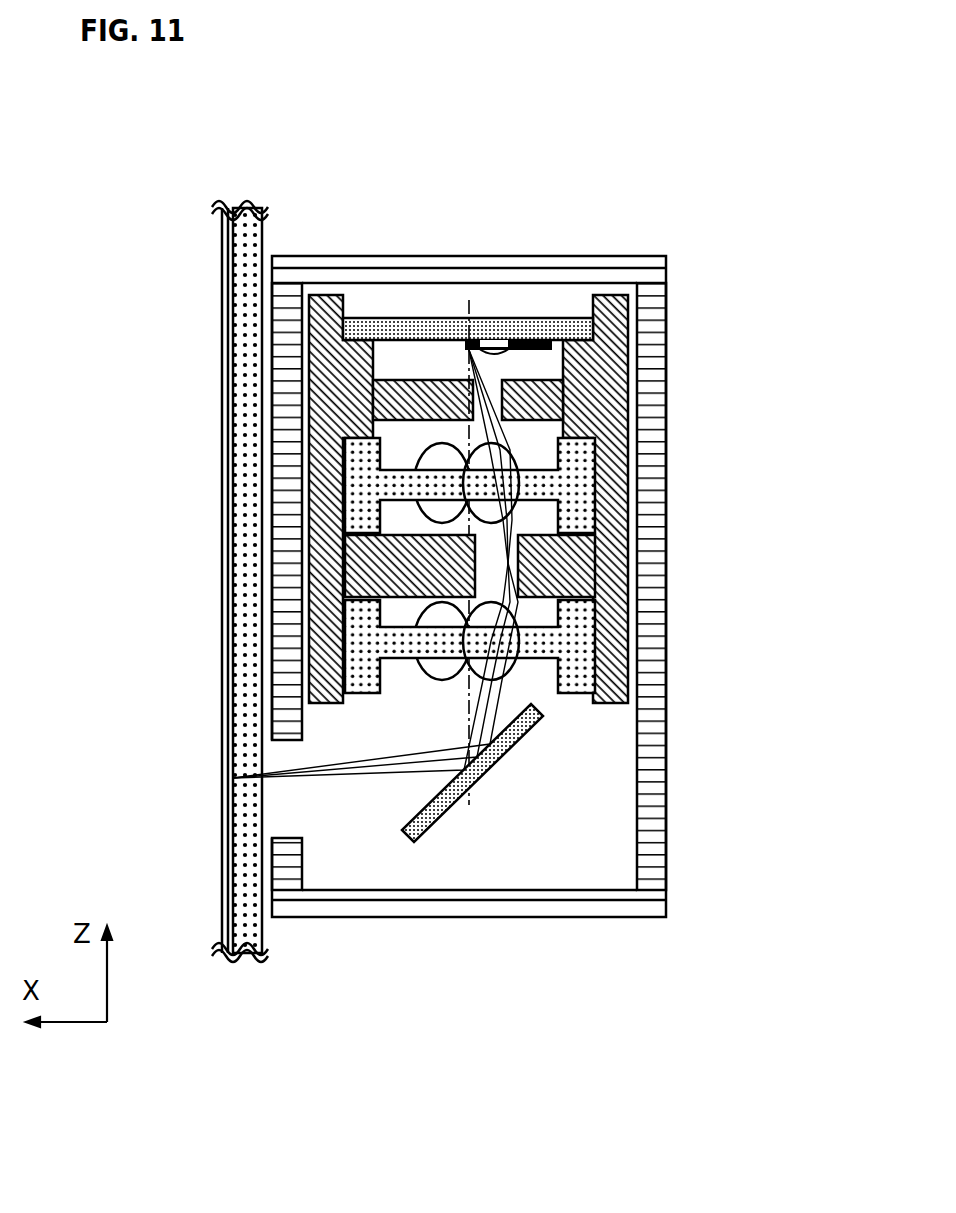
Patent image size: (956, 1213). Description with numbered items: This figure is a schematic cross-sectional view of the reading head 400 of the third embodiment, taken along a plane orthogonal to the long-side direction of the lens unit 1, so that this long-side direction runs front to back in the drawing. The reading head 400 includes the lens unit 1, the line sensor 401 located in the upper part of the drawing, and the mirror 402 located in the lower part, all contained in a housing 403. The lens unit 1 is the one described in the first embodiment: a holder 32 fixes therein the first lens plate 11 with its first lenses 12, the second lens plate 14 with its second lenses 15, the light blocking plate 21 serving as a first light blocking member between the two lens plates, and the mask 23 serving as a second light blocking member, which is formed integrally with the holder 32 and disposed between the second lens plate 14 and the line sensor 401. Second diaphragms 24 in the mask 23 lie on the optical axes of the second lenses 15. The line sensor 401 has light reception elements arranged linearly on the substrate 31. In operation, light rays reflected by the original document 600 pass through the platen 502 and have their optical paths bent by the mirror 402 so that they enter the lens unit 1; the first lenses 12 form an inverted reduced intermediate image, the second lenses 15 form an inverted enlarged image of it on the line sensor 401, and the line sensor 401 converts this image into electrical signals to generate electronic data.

The reading head 400 is at (703, 246).
The housing 403 is at (350, 263).
The line sensor 401 is at (472, 345).
The substrate 31 is at (558, 318).
The lens unit 1 is at (452, 510).
The second diaphragms 24 is at (545, 409).
The mask 23 is at (547, 400).
The second lenses 15 is at (437, 450).
The second lens plate 14 is at (347, 472).
The holder 32 is at (618, 527).
The light blocking plate 21 is at (577, 577).
The first lens plate 11 is at (343, 650).
The first lenses 12 is at (430, 683).
The mirror 402 is at (522, 740).
The platen 502 is at (243, 833).
The original document 600 is at (195, 581).